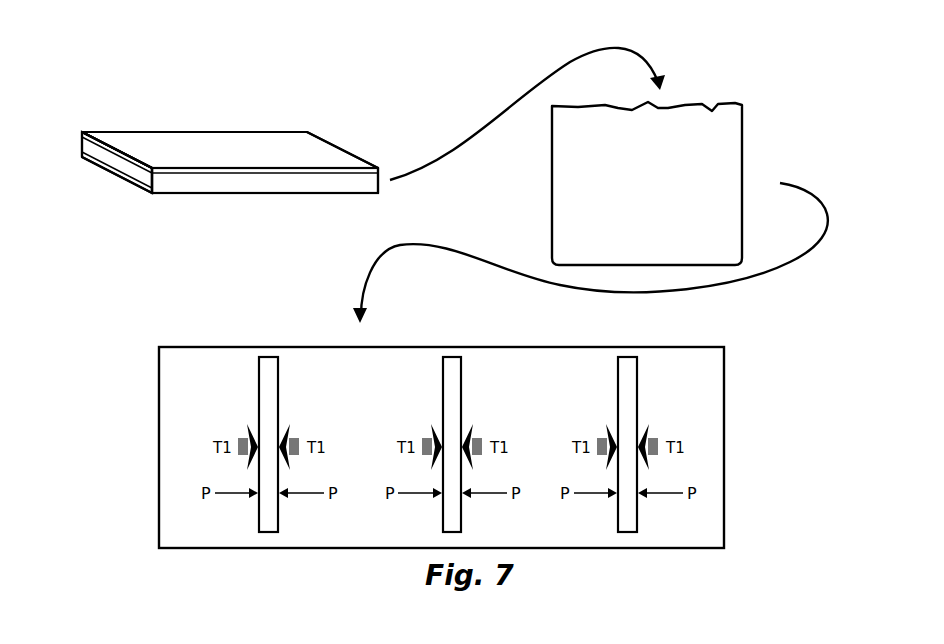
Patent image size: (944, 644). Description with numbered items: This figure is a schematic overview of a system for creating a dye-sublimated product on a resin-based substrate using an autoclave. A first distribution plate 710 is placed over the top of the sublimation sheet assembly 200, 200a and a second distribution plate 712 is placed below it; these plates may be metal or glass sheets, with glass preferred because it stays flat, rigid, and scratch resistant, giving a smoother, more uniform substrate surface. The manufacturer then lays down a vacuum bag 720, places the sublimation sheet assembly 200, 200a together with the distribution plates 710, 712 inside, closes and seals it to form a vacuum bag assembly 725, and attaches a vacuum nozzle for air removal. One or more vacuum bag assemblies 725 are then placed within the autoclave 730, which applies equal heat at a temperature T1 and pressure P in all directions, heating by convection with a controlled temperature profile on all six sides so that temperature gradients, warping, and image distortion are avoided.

The sublimation sheet assembly 200 is at (221, 180).
The sublimation sheet assembly 200a is at (265, 205).
The first distribution plate 710 is at (137, 142).
The second distribution plate 712 is at (125, 182).
The vacuum bag 720 is at (632, 206).
The vacuum bag assembly 725 is at (268, 384).
The autoclave 730 is at (725, 393).